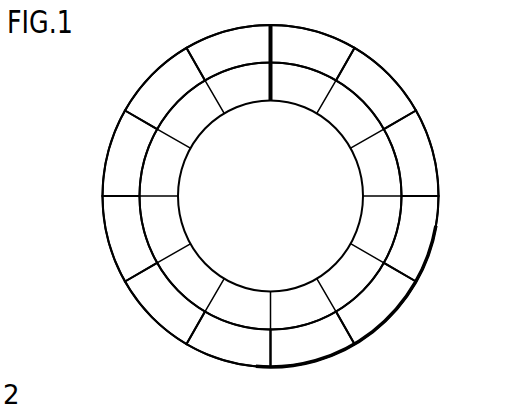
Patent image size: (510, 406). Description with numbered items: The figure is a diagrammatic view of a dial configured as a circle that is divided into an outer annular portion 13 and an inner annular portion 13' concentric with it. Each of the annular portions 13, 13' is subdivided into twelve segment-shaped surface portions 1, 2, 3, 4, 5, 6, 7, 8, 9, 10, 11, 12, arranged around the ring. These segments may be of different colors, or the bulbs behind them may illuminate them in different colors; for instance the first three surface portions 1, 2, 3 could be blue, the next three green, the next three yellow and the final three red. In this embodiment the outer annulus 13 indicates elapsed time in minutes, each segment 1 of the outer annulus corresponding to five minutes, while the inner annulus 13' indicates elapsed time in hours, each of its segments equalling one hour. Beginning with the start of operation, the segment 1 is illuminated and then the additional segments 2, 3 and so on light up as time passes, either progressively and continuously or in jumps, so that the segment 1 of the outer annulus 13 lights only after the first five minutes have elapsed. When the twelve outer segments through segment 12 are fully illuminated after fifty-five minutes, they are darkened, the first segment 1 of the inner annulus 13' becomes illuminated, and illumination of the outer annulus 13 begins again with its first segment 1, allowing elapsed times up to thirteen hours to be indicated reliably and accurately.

The segment-shaped surface portion 1 is at (333, 49).
The segment-shaped surface portion 2 is at (403, 103).
The segment-shaped surface portion 3 is at (434, 186).
The segment-shaped surface portion 4 is at (418, 253).
The segment-shaped surface portion 5 is at (373, 318).
The segment-shaped surface portion 6 is at (303, 350).
The segment-shaped surface portion 7 is at (210, 344).
The segment-shaped surface portion 8 is at (146, 289).
The segment-shaped surface portion 9 is at (112, 218).
The segment-shaped surface portion 10 is at (123, 136).
The segment-shaped surface portion 11 is at (165, 63).
The segment-shaped surface portion 12 is at (246, 28).
The outer annular portion 13 is at (271, 196).
The inner annular portion 13' is at (271, 196).